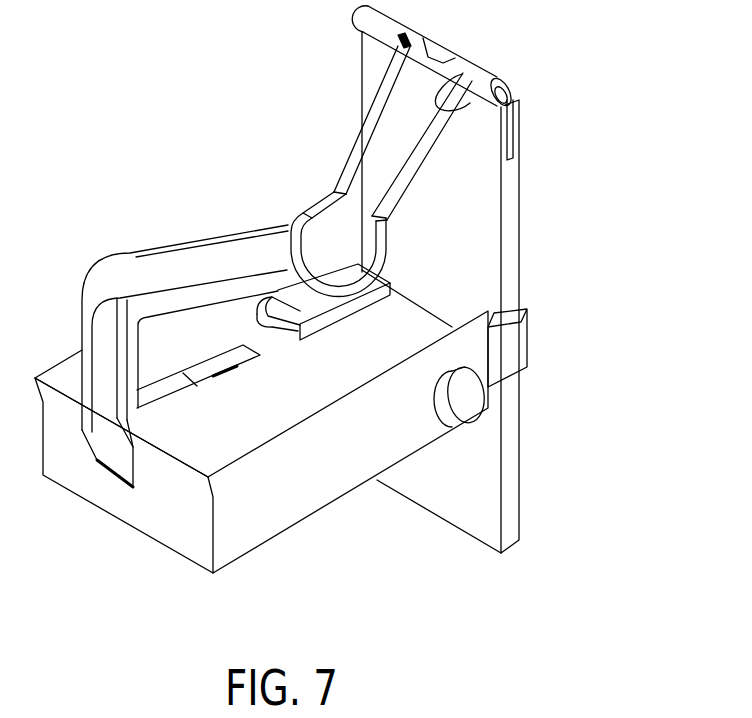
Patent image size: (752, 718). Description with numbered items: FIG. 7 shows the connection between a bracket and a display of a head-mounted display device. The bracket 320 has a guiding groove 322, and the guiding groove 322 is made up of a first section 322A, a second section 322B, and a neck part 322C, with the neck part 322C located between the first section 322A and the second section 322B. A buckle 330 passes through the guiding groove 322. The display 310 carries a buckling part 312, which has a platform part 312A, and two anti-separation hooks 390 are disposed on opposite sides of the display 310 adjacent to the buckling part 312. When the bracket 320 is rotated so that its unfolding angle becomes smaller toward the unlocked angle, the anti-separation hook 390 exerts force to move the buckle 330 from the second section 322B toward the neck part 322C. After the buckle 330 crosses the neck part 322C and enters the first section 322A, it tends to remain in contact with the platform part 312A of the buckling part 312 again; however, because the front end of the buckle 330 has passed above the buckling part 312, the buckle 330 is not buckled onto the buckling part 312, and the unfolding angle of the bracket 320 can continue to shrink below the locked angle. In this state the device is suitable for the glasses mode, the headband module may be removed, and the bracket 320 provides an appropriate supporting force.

The display 310 is at (265, 527).
The buckling part 312 is at (283, 343).
The platform part 312A is at (310, 298).
The bracket 320 is at (512, 201).
The guiding groove 322 is at (511, 57).
The first section 322A is at (511, 94).
The second section 322B is at (465, 60).
The neck part 322C is at (485, 73).
The buckle 330 is at (364, 136).
The anti-separation hook 390 is at (170, 262).